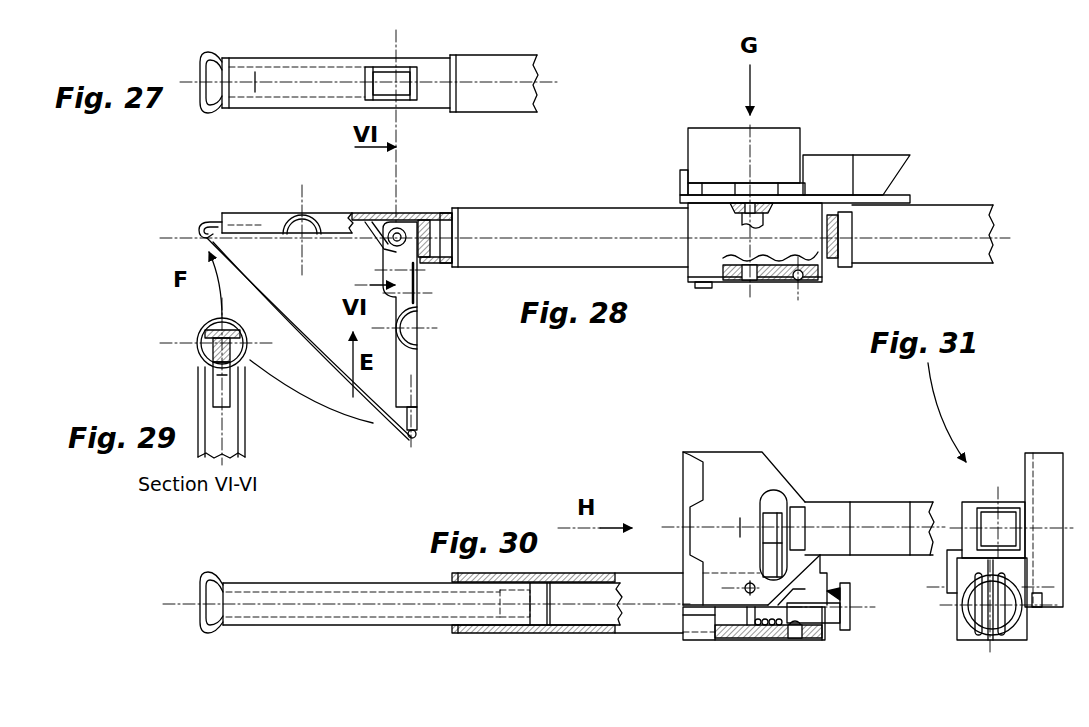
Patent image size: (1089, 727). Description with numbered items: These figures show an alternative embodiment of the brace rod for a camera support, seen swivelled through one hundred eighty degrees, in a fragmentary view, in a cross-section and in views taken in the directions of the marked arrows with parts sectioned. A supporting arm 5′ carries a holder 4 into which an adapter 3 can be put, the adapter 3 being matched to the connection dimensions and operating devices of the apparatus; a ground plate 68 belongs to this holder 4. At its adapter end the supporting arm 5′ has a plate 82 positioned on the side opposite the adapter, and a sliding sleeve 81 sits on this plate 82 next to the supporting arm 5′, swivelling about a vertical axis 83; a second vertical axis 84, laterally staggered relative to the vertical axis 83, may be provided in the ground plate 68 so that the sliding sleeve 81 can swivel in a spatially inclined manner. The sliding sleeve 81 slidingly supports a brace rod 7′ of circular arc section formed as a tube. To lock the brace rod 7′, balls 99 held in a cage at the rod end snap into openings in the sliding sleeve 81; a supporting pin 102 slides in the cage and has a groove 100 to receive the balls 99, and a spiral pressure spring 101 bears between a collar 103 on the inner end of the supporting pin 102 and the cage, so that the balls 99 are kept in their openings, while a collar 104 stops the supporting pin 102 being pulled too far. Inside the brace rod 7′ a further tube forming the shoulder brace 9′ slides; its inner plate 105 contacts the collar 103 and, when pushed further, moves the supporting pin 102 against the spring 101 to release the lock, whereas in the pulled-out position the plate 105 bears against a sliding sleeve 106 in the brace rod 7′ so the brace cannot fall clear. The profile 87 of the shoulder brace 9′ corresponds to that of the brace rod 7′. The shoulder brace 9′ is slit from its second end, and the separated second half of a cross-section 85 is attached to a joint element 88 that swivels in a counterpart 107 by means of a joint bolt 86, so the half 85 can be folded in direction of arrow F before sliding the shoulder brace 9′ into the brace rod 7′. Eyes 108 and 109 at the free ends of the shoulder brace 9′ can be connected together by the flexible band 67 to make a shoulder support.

In FIG. 28, the adapter 3 is at (780, 138).
In FIG. 28, the holder 4 is at (680, 193).
In FIG. 28, the supporting arm 5′ is at (943, 234).
In FIG. 31, the supporting arm 5′ is at (980, 508).
In FIG. 28, the brace rod 7′ is at (503, 257).
In FIG. 30, the brace rod 7′ is at (650, 617).
In FIG. 27, the shoulder brace 9′ is at (322, 120).
In FIG. 28, the shoulder brace 9′ is at (425, 210).
In FIG. 30, the shoulder brace 9′ is at (328, 612).
In FIG. 28, the flexible band 67 is at (200, 237).
In FIG. 31, the ground plate 68 is at (1032, 453).
In FIG. 30, the sliding sleeve 81 is at (780, 640).
In FIG. 31, the sliding sleeve 81 is at (993, 640).
In FIG. 28, the plate 82 is at (693, 277).
In FIG. 30, the plate 82 is at (962, 512).
In FIG. 31, the plate 82 is at (1000, 563).
In FIG. 31, the vertical axis 83 is at (947, 587).
In FIG. 31, the second vertical axis 84 is at (1043, 590).
In FIG. 28, the second half of a cross-section 85 is at (412, 360).
In FIG. 28, the joint bolt 86 is at (377, 246).
In FIG. 29, the joint bolt 86 is at (200, 345).
In FIG. 28, the profile 87 is at (440, 213).
In FIG. 29, the profile 87 is at (210, 333).
In FIG. 28, the joint element 88 is at (389, 246).
In FIG. 30, the balls 99 is at (799, 633).
In FIG. 30, the groove 100 is at (783, 606).
In FIG. 30, the spiral pressure spring 101 is at (757, 640).
In FIG. 30, the supporting pin 102 is at (835, 617).
In FIG. 30, the collar 103 is at (683, 613).
In FIG. 30, the collar 104 is at (848, 590).
In FIG. 30, the plate 105 is at (538, 620).
In FIG. 30, the sliding sleeve 106 is at (470, 633).
In FIG. 28, the counterpart 107 is at (377, 212).
In FIG. 29, the counterpart 107 is at (232, 335).
In FIG. 27, the bow or eye 108 is at (212, 114).
In FIG. 28, the bow or eye 108 is at (205, 220).
In FIG. 30, the bow or eye 108 is at (203, 632).
In FIG. 31, the bow or eye 108 is at (972, 637).
In FIG. 28, the bow or eye 109 is at (417, 417).
In FIG. 31, the bow or eye 109 is at (1007, 637).